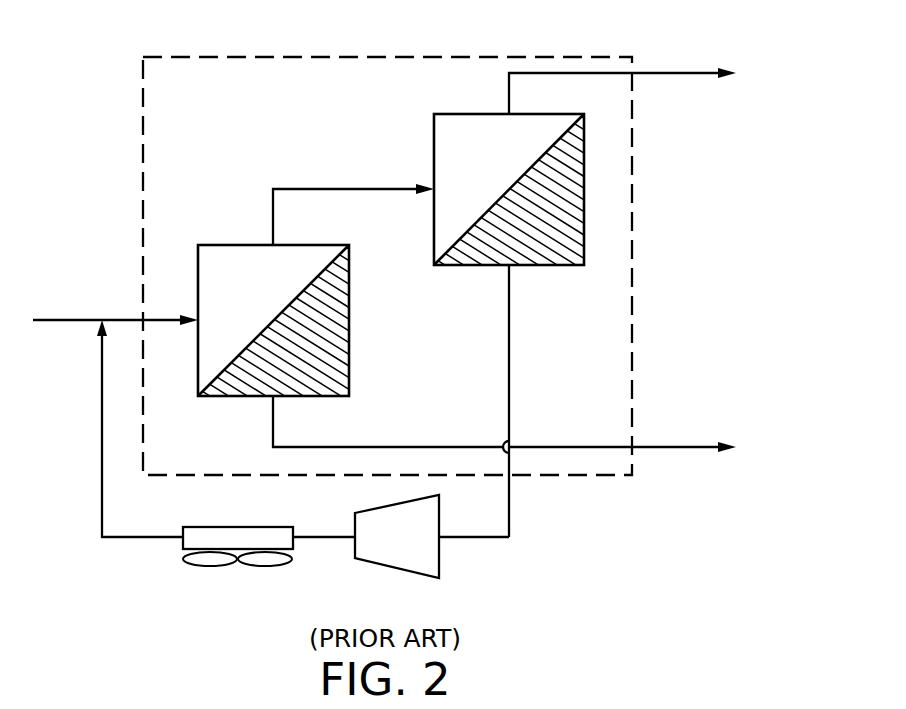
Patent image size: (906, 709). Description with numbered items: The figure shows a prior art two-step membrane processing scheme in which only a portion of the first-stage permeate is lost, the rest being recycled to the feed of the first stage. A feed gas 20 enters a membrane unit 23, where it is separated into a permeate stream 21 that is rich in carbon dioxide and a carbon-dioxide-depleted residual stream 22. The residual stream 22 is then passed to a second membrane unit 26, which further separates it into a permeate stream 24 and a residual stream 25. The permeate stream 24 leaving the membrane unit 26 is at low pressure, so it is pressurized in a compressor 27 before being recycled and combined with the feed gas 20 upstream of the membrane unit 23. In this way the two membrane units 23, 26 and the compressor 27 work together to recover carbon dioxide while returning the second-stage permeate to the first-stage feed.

The feed gas 20 is at (60, 318).
The permeate stream 21 is at (684, 446).
The residual stream 22 is at (355, 187).
The membrane unit 23 is at (252, 295).
The permeate stream 24 is at (509, 367).
The residual stream 25 is at (685, 72).
The membrane unit 26 is at (487, 165).
The compressor 27 is at (413, 549).